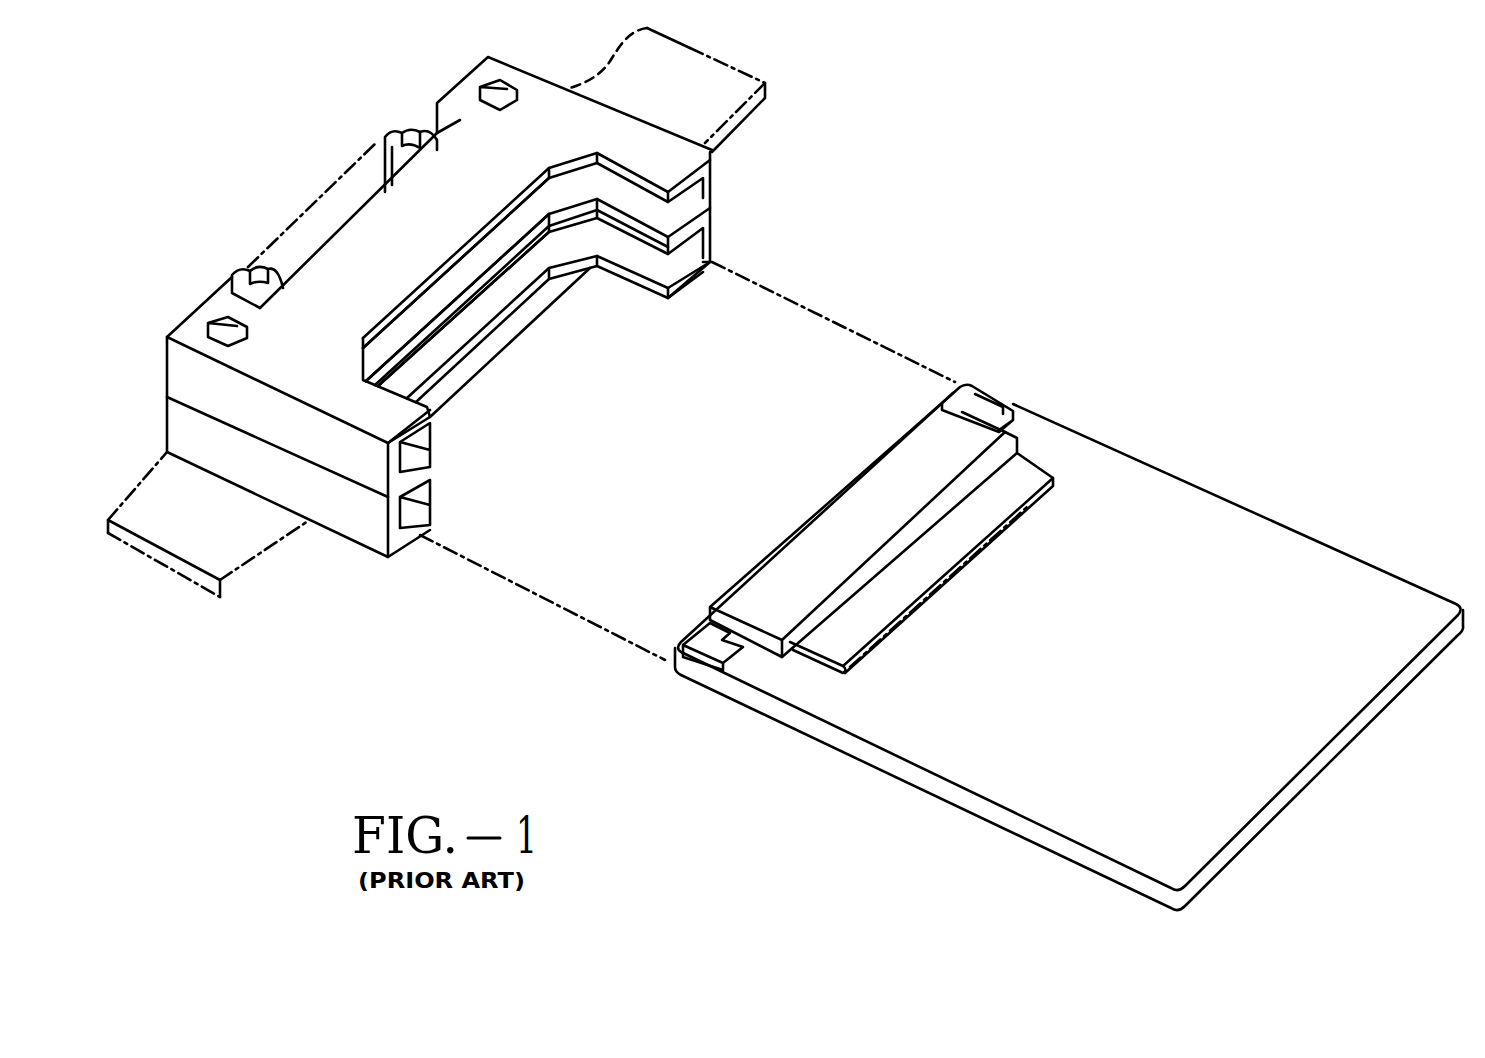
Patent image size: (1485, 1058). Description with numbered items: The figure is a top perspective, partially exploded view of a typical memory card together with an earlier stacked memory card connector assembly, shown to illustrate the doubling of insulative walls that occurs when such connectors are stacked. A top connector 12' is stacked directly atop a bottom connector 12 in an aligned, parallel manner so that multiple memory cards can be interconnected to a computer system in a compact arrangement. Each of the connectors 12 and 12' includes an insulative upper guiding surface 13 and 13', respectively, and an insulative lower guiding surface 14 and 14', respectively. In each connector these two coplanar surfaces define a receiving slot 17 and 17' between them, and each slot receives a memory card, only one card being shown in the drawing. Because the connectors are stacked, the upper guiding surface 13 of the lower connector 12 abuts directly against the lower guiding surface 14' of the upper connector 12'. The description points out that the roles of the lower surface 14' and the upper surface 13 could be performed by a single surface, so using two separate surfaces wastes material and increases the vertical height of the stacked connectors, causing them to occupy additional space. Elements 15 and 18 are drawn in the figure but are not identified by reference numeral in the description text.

The bottom connector 12 is at (607, 292).
The top connector 12' is at (611, 250).
The upper guiding surface 13 is at (486, 309).
The upper guiding surface 13' is at (496, 263).
The lower guiding surface 14 is at (558, 354).
The lower guiding surface 14' is at (462, 310).
The printed circuit board 15 is at (1229, 500).
The receiving slot 17 is at (469, 524).
The receiving slot 17' is at (473, 467).
The flat cable 18 is at (730, 58).